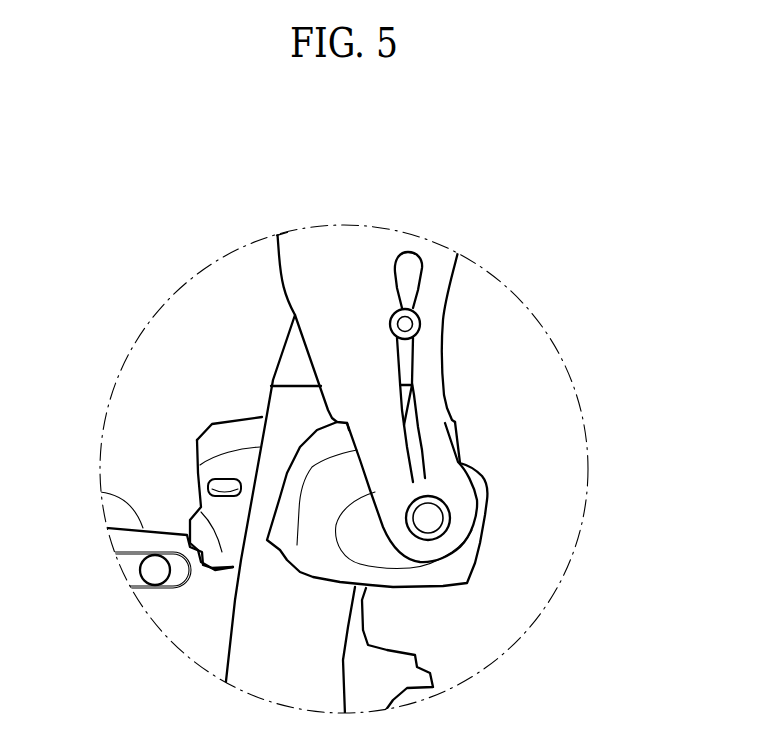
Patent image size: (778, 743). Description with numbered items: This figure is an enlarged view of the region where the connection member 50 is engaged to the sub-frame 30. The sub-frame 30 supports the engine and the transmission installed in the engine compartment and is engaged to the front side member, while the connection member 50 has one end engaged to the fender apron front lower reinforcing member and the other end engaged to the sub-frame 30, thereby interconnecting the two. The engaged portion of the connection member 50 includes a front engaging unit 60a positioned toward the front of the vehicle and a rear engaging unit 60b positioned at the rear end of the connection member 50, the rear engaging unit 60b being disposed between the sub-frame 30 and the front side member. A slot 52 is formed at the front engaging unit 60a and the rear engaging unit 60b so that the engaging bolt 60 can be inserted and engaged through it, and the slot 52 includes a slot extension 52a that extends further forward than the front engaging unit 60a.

The sub-frame 30 is at (100, 492).
The connection member 50 is at (292, 274).
The slot 52 is at (508, 328).
The slot extension 52a is at (408, 270).
The bolt 60 is at (540, 389).
The front engaging unit 60a is at (416, 316).
The rear engaging unit 60b is at (437, 512).